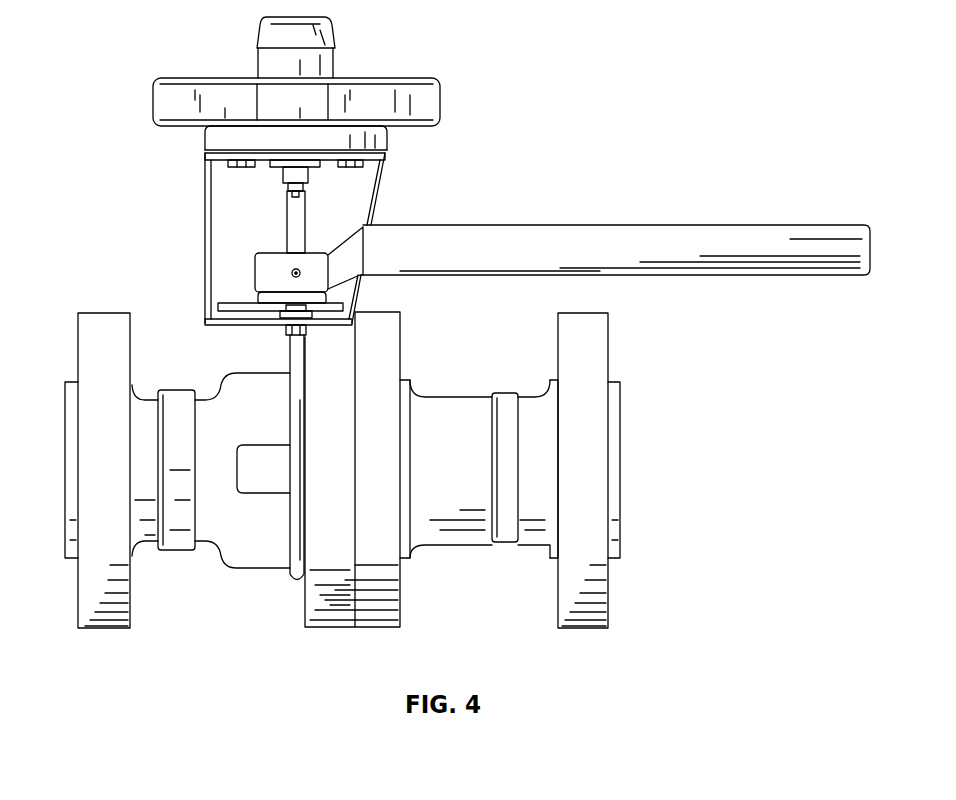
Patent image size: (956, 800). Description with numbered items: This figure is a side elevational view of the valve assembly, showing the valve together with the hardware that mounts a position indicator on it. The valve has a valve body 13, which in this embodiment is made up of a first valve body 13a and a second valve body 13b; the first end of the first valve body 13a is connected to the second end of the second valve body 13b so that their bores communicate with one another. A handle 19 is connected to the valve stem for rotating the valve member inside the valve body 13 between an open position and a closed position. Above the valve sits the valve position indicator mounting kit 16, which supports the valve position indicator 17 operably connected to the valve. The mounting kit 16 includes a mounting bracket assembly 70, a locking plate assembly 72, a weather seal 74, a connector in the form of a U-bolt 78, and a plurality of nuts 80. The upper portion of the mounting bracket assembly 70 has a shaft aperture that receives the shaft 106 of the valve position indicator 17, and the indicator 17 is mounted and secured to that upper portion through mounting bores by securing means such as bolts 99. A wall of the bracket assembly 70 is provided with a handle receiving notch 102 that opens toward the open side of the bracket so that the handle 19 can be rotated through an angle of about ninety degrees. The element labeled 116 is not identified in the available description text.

The valve body 13 is at (378, 628).
The first valve body 13a is at (78, 617).
The second valve body 13b is at (610, 617).
The valve position indicator mounting kit 16 is at (386, 166).
The valve position indicator 17 is at (372, 79).
The handle 19 is at (688, 225).
The mounting bracket assembly 70 is at (207, 176).
The locking plate assembly 72 is at (245, 300).
The weather seal 74 is at (339, 316).
The U-bolt 78 is at (292, 589).
The nuts 80 is at (283, 331).
The bolts 99 is at (357, 168).
The handle receiving notch 102 is at (372, 220).
The shaft 106 is at (291, 198).
The actuator rod 116 is at (307, 213).